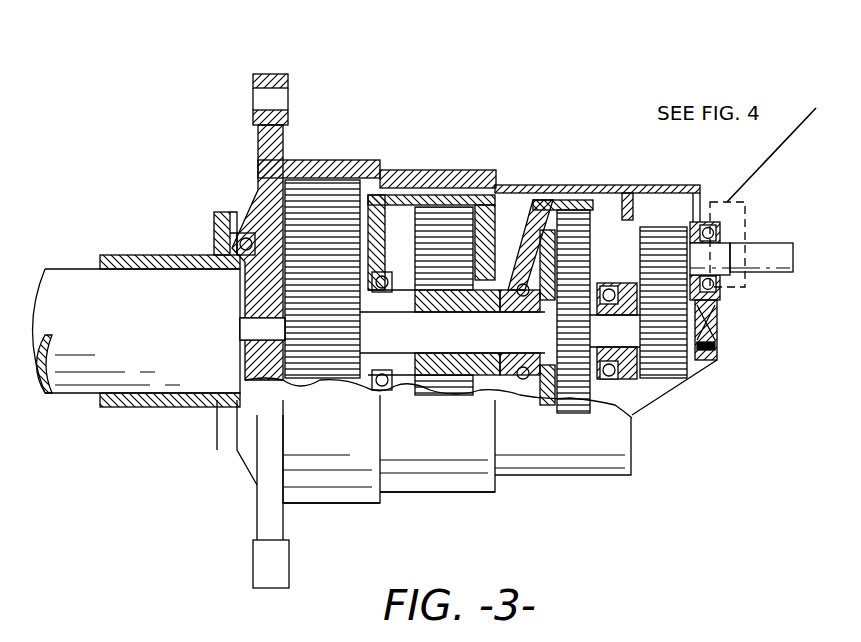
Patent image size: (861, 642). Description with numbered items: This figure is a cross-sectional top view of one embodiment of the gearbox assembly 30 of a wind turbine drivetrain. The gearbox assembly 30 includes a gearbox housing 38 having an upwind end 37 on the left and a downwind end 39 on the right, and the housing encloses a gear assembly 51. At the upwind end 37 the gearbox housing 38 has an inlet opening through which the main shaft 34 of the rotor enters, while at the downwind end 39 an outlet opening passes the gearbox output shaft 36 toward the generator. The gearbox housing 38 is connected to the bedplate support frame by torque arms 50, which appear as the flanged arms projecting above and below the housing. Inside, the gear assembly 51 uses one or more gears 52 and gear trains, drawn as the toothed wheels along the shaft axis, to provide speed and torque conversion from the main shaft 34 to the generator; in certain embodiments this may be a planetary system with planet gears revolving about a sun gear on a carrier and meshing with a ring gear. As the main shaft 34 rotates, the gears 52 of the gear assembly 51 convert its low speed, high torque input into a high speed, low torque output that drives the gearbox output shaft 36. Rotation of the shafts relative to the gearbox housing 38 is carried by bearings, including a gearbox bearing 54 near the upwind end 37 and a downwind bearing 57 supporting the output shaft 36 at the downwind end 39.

The gearbox assembly 30 is at (578, 95).
The main shaft 34 is at (78, 395).
The gearbox output shaft 36 is at (770, 275).
The upwind end 37 is at (258, 145).
The gearbox housing 38 is at (467, 170).
The downwind end 39 is at (700, 215).
The torque arm 50 is at (253, 80).
The gear assembly 51 is at (332, 215).
The gears 52 is at (303, 202).
The gearbox bearing 54 is at (222, 240).
The downwind bearing 57 is at (716, 312).